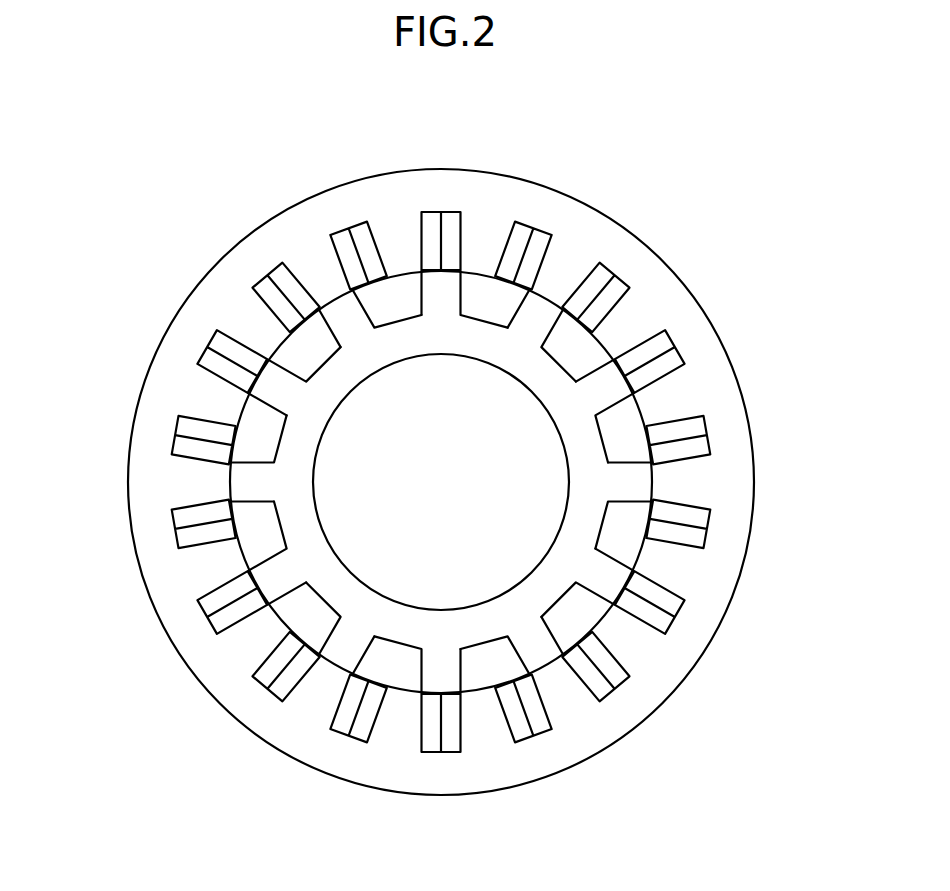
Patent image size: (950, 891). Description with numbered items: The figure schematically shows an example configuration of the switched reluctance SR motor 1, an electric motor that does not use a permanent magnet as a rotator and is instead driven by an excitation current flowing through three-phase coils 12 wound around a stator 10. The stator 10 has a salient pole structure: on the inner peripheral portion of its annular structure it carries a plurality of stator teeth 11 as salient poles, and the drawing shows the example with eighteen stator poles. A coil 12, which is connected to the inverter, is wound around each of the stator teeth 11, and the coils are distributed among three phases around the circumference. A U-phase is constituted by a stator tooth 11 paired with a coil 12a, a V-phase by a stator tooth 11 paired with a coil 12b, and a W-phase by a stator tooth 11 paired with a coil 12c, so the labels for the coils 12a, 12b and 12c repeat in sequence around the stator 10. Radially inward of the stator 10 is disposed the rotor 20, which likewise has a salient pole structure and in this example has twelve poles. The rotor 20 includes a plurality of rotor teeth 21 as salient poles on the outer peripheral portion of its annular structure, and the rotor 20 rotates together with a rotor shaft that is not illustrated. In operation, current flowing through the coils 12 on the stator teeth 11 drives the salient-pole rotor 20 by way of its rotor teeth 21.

The SR motor 1 is at (721, 115).
The stator 10 is at (373, 178).
The stator tooth 11 is at (628, 647).
The coil 12 is at (447, 480).
The coil 12a is at (342, 240).
The coil 12b is at (520, 236).
The coil 12c is at (430, 222).
The rotor 20 is at (521, 466).
The rotor tooth 21 is at (617, 562).